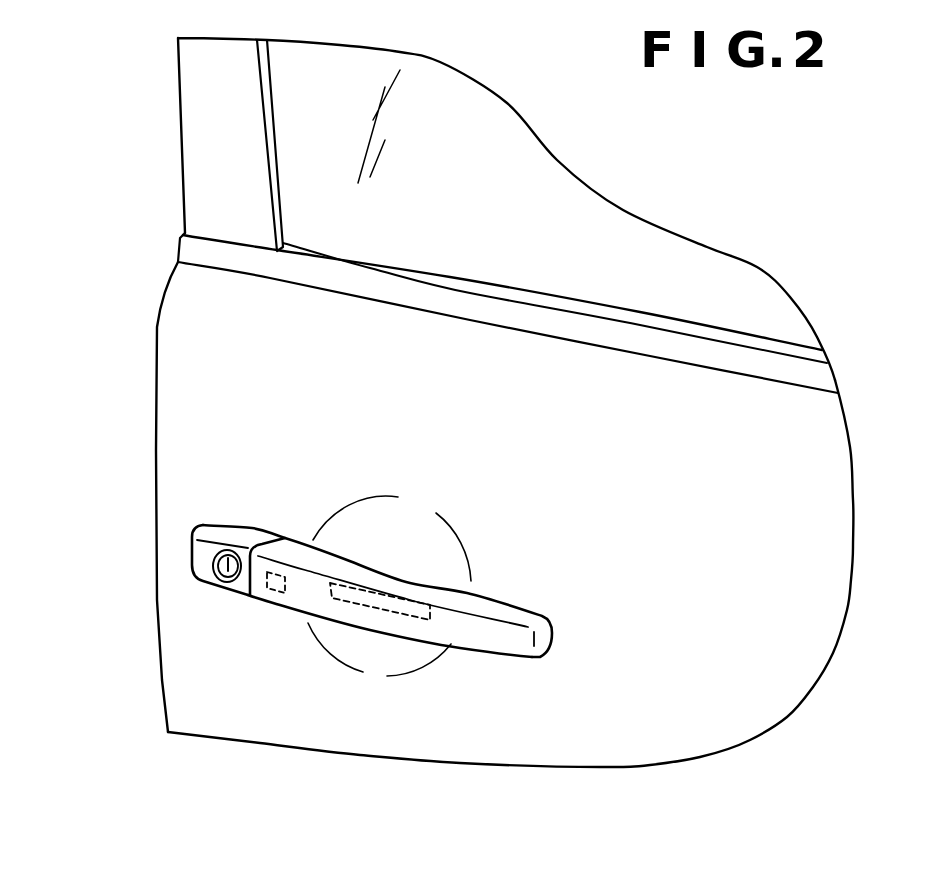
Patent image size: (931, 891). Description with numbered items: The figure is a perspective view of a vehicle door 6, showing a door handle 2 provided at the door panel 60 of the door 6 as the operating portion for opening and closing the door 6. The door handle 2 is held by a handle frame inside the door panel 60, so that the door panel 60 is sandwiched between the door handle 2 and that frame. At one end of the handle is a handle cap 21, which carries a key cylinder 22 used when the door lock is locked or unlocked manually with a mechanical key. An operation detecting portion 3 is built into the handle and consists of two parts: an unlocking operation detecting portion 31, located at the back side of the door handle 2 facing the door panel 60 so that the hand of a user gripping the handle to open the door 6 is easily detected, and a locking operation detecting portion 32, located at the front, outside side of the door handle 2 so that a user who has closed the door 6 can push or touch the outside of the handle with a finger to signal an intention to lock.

The door handle 2 is at (507, 661).
The operation detecting portion 3 is at (387, 535).
The door 6 is at (155, 322).
The handle cap 21 is at (202, 575).
The key cylinder 22 is at (222, 553).
The unlocking operation detecting portion 31 is at (443, 606).
The locking operation detecting portion 32 is at (268, 575).
The door panel 60 is at (203, 688).